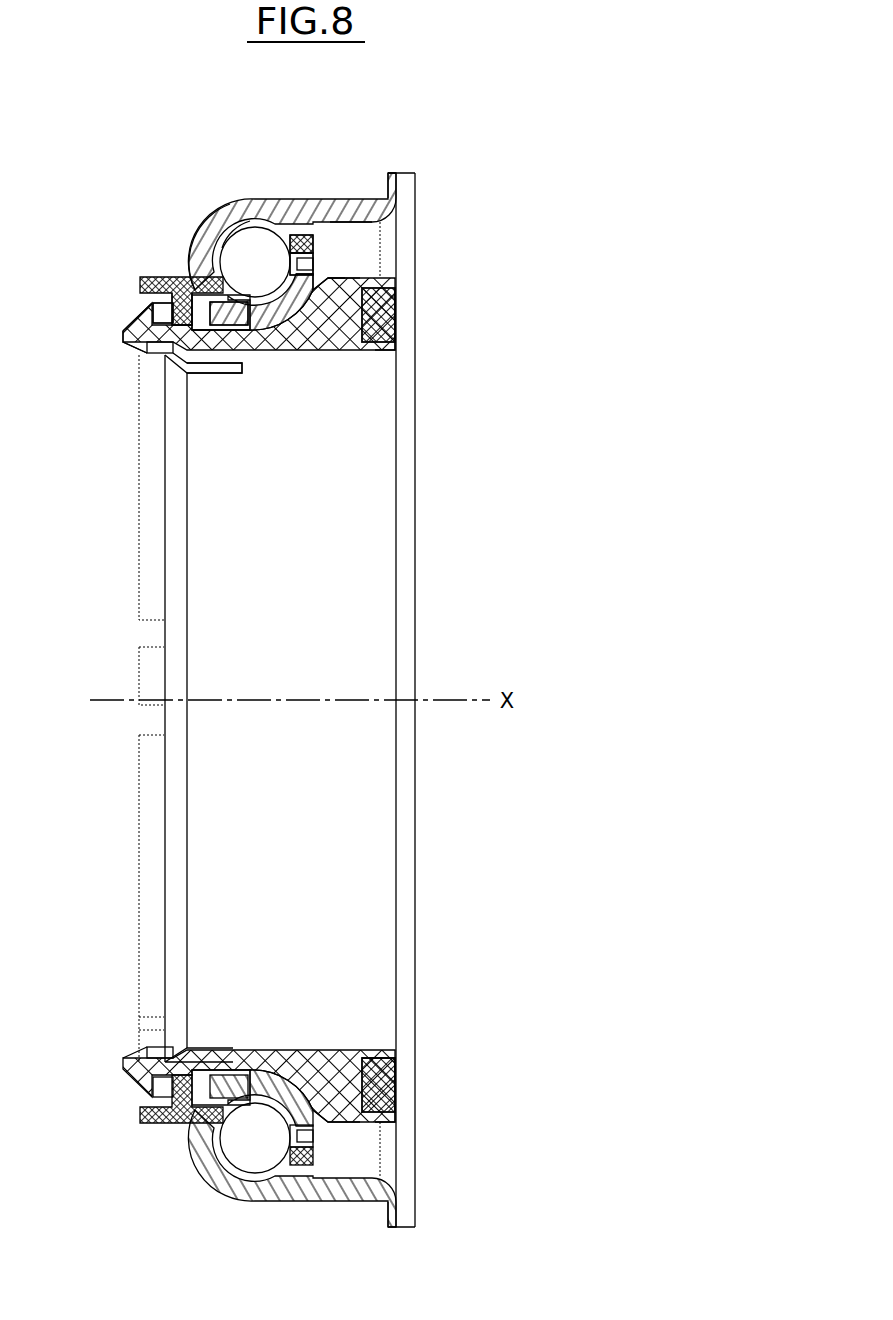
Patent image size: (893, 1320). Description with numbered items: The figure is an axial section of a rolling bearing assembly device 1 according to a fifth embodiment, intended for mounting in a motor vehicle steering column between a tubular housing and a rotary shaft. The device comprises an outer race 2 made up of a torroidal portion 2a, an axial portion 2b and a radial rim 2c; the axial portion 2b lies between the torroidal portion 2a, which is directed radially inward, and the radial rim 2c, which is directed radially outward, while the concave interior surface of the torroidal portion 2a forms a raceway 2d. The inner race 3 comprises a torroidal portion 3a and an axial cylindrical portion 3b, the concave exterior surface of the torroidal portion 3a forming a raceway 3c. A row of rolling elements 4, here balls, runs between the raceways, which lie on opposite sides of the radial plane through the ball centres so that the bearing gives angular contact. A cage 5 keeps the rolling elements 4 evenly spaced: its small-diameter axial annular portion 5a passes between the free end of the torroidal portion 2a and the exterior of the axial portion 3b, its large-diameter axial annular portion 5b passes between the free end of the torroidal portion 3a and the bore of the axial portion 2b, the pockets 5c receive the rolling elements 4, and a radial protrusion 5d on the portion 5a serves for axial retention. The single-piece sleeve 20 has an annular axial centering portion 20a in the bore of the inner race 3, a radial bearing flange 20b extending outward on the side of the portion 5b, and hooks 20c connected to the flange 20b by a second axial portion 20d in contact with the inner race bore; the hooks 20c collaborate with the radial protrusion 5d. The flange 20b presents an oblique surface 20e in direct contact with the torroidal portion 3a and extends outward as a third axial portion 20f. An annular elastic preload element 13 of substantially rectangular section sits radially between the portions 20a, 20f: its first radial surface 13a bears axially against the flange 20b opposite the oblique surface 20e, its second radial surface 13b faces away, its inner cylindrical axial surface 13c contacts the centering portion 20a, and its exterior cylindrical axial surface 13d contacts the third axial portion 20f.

The rolling bearing assembly device 1 is at (462, 162).
The outer race 2 is at (301, 197).
The torroidal portion 2a is at (200, 262).
The axial portion 2b is at (373, 220).
The radial rim 2c is at (397, 174).
The raceway 2d is at (242, 245).
The inner race 3 is at (310, 280).
The torroidal portion 3a is at (283, 302).
The axial cylindrical portion 3b is at (220, 330).
The raceway 3c is at (254, 335).
The rolling elements 4 is at (247, 275).
The cage 5 is at (158, 277).
The axial annular portion of small diameter 5a is at (190, 292).
The axial annular portion of large diameter 5b is at (318, 258).
The pockets 5c is at (293, 236).
The radial protrusion 5d is at (152, 294).
The elastic preload element 13 is at (385, 1118).
The first radial surface 13a is at (333, 1083).
The second radial surface 13b is at (396, 1097).
The inner cylindrical axial surface 13c is at (380, 1090).
The exterior cylindrical axial surface 13d is at (383, 1122).
The sleeve 20 is at (365, 352).
The annular axial centering portion 20a is at (396, 352).
The radial bearing flange 20b is at (322, 261).
The hooks 20c is at (132, 331).
The second axial portion 20d is at (215, 374).
The oblique surface 20e is at (320, 305).
The third axial portion 20f is at (392, 285).